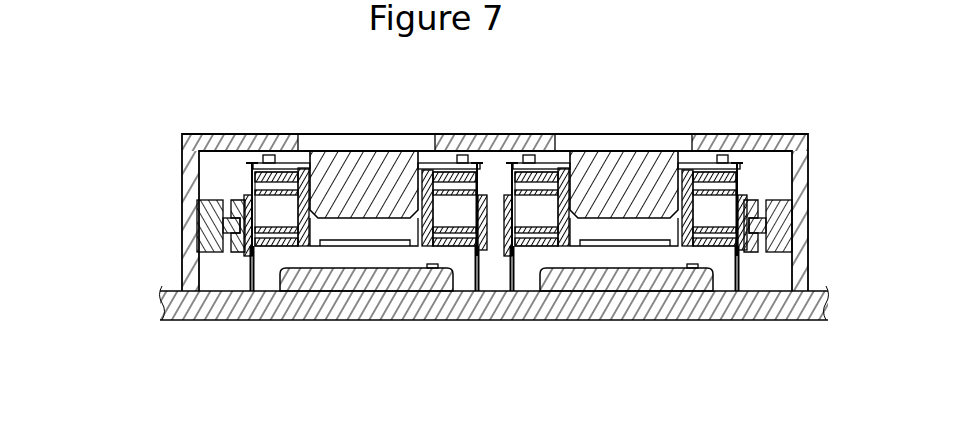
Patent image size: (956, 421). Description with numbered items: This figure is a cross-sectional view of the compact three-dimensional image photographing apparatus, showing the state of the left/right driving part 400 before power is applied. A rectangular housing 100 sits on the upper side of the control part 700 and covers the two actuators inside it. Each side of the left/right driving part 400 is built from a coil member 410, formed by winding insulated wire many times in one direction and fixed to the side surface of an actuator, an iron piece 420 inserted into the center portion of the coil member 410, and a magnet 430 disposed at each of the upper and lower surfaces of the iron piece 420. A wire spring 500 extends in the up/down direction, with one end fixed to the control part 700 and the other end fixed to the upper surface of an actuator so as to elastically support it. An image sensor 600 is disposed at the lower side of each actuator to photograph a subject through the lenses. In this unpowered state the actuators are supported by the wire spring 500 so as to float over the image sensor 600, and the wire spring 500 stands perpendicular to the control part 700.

The housing 100 is at (218, 140).
The left/right driving part 400 is at (137, 203).
The coil member 410 is at (242, 203).
The iron piece 420 is at (169, 240).
The magnet 430 is at (205, 209).
The wire spring 500 is at (520, 280).
The image sensor 600 is at (308, 280).
The control part 700 is at (387, 310).